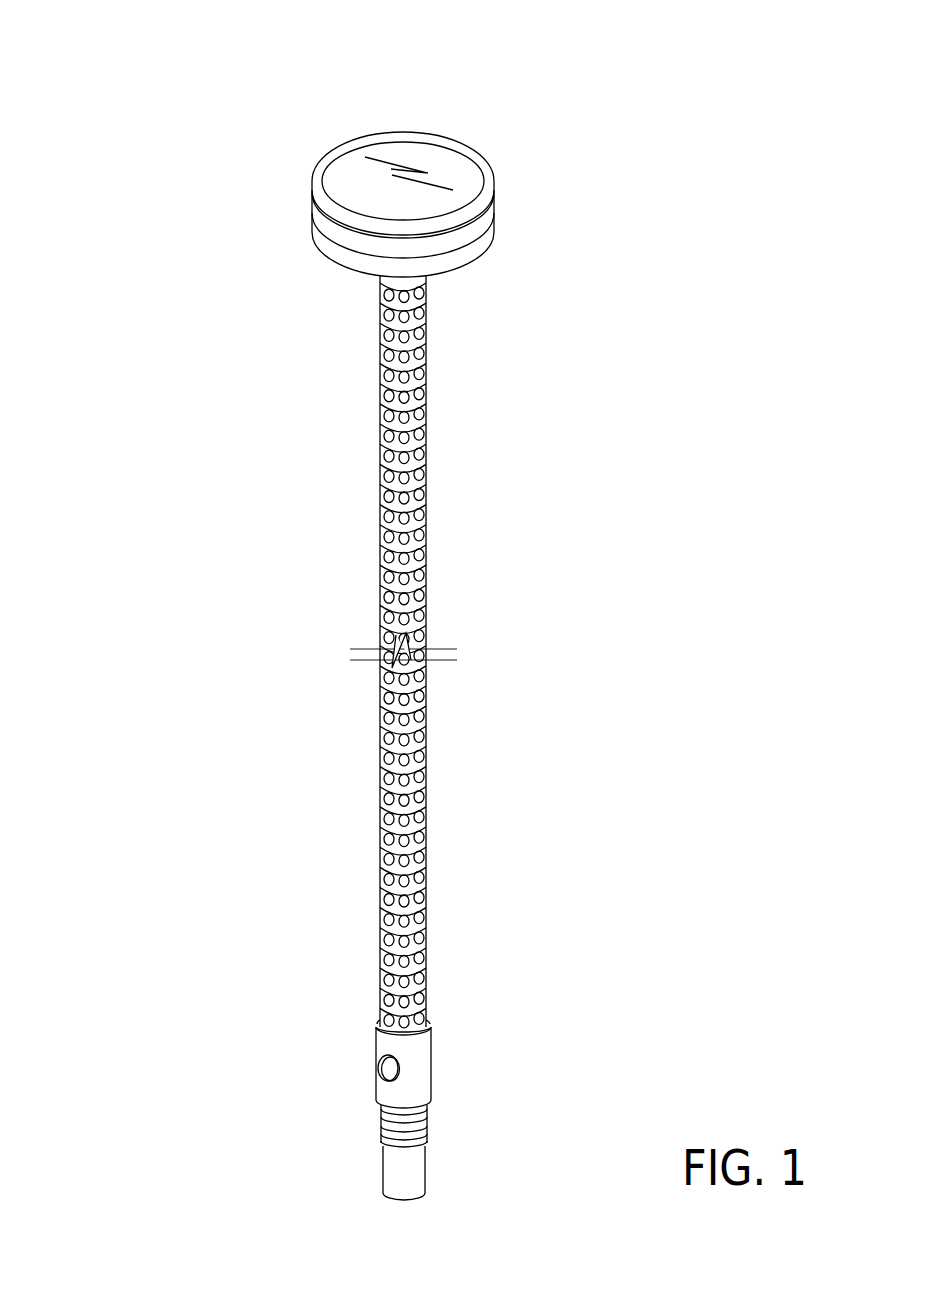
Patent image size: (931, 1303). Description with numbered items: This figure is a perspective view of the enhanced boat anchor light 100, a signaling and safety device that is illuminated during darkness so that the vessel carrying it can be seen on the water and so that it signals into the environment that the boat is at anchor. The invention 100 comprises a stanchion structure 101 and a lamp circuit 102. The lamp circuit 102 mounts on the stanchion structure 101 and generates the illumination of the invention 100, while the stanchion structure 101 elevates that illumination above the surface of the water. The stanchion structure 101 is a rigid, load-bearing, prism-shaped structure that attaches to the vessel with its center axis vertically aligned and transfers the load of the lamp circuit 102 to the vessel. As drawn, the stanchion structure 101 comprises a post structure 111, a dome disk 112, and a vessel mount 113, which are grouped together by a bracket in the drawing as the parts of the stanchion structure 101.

The enhanced boat anchor light 100 is at (164, 102).
The stanchion structure 101 is at (562, 666).
The lamp circuit 102 is at (386, 466).
The post structure 111 is at (428, 1120).
The dome disk 112 is at (492, 244).
The vessel mount 113 is at (415, 1170).